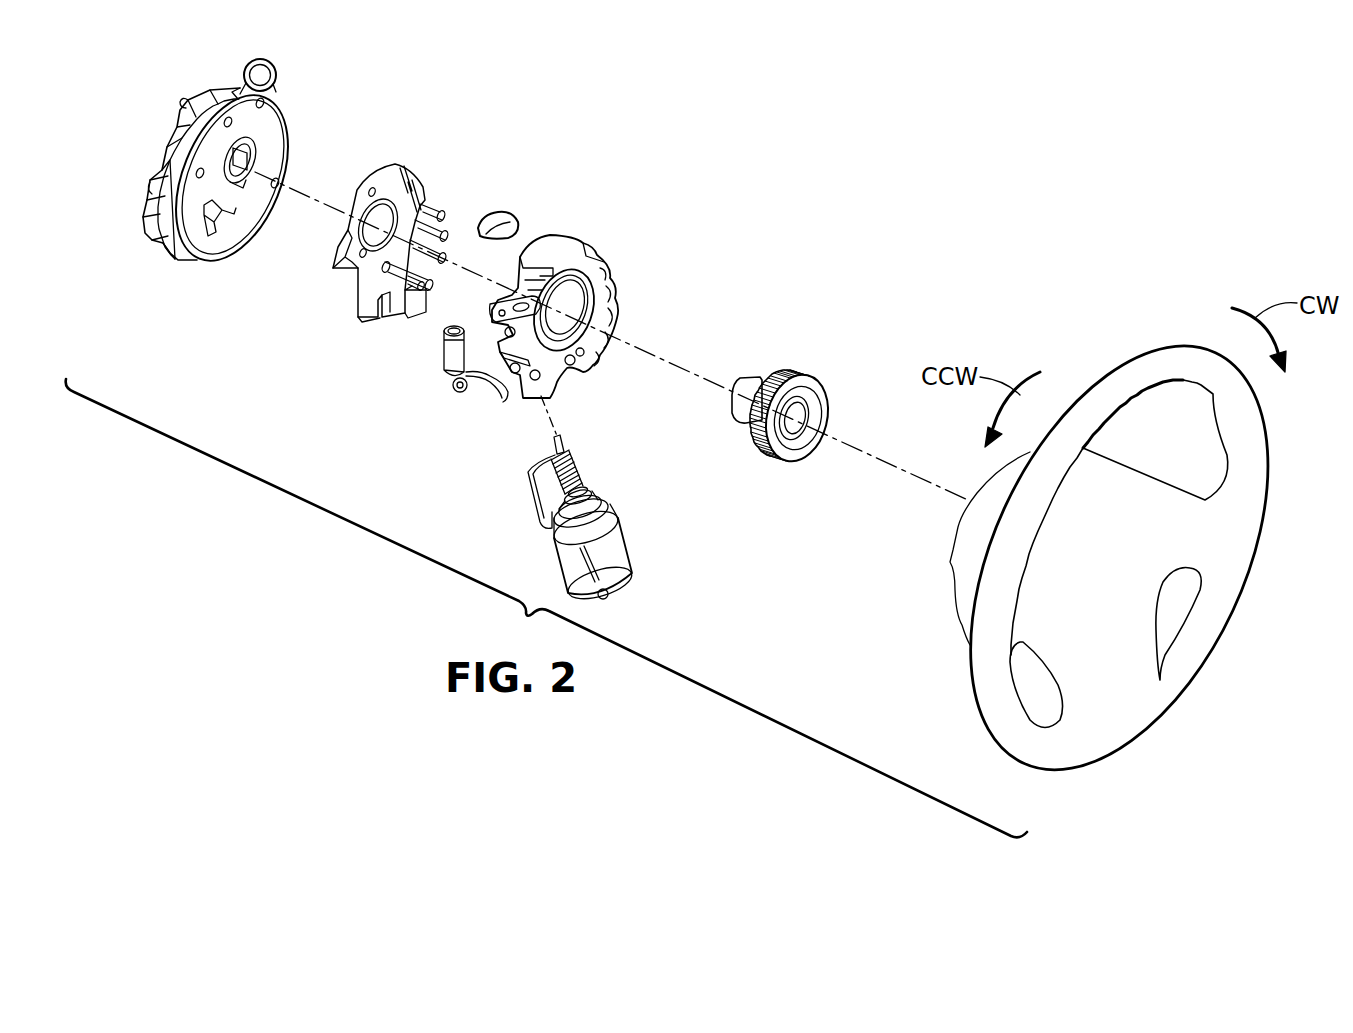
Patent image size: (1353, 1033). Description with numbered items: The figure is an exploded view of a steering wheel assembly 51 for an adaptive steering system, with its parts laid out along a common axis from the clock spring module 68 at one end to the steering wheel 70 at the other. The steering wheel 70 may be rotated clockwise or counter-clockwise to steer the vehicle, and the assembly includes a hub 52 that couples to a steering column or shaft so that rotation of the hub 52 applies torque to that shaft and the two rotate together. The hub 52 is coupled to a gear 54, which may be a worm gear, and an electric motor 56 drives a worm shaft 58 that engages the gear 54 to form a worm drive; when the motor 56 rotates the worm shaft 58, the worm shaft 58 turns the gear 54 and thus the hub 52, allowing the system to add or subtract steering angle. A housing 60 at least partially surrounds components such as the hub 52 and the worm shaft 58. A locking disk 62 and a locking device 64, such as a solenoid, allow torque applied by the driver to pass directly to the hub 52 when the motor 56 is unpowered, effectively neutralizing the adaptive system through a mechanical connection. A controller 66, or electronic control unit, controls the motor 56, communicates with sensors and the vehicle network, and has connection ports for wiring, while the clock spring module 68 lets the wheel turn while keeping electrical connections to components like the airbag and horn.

The steering wheel assembly 51 is at (851, 141).
The hub 52 is at (758, 377).
The gear 54 is at (820, 390).
The electric motor 56 is at (622, 543).
The worm shaft 58 is at (575, 473).
The housing 60 is at (608, 272).
The locking disk 62 is at (517, 210).
The locking device 64 is at (443, 360).
The controller 66 is at (412, 180).
The clock spring module 68 is at (271, 126).
The steering wheel 70 is at (1123, 360).